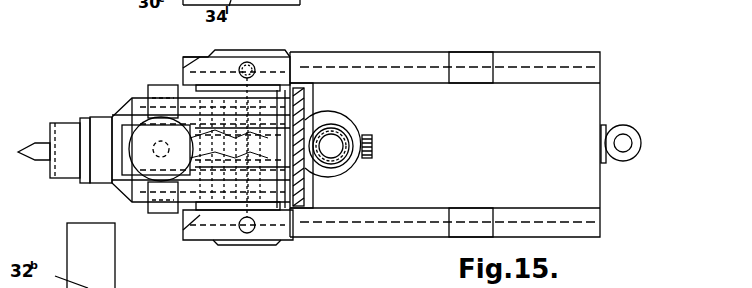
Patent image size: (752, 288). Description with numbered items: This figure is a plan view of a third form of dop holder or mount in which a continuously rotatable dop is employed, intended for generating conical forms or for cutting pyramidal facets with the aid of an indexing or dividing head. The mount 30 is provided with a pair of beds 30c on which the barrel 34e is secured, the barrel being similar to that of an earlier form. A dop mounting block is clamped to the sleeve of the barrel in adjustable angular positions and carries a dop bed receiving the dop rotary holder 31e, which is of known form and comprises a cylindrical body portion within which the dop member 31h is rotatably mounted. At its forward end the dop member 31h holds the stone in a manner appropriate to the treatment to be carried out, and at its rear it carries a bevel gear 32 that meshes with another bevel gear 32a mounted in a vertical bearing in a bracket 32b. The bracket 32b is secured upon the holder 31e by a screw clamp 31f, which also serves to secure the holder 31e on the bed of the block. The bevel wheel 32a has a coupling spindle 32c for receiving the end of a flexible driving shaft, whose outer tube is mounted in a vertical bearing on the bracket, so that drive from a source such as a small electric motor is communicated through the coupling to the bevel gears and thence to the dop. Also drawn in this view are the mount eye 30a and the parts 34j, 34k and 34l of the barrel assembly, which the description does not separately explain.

The mount 30 is at (435, 51).
The eye of frame 30a is at (623, 125).
The beds 30c is at (307, 220).
The dop rotary holder 31e is at (125, 118).
The screw clamp 31f is at (162, 88).
The dop member 31h is at (73, 110).
The bevel gear 32 is at (312, 83).
The bevel gear 32a is at (350, 163).
The bracket 32b is at (298, 138).
The coupling spindle 32c is at (333, 146).
The barrel 34e is at (290, 62).
The lower block 34j is at (178, 198).
The bolt 34k is at (228, 258).
The plate 34l is at (262, 243).